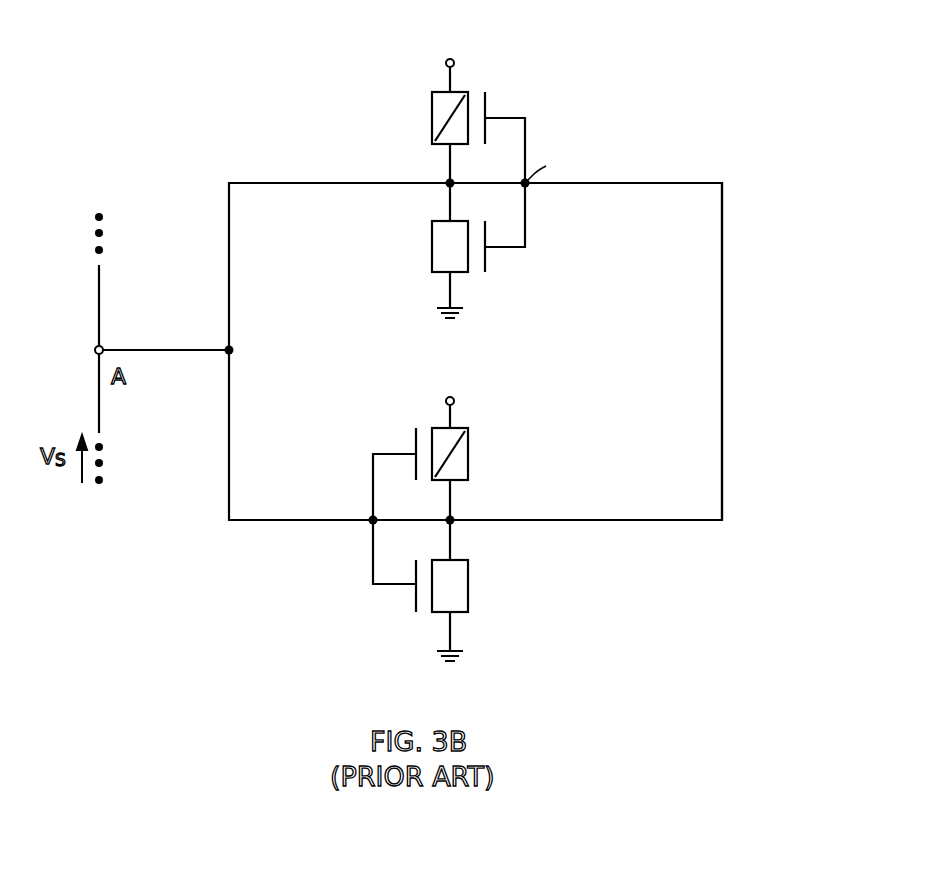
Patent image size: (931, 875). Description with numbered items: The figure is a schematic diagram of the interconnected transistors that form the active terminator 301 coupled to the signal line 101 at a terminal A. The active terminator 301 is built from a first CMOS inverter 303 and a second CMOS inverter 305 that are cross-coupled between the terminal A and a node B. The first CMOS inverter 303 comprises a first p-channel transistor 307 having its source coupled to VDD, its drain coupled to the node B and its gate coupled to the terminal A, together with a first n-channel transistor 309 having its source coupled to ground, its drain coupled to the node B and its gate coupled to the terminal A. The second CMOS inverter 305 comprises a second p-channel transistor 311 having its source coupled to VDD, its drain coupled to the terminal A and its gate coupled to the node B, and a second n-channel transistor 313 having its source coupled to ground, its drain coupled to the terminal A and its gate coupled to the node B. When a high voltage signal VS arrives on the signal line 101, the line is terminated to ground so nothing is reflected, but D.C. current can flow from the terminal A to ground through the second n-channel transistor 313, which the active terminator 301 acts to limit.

The signal line 101 is at (99, 318).
The active terminator 301 is at (772, 92).
The first CMOS inverter 303 is at (490, 539).
The second CMOS inverter 305 is at (494, 174).
The first p-channel transistor 307 is at (469, 457).
The first n-channel transistor 309 is at (469, 588).
The second p-channel transistor 311 is at (429, 125).
The second n-channel transistor 313 is at (429, 253).